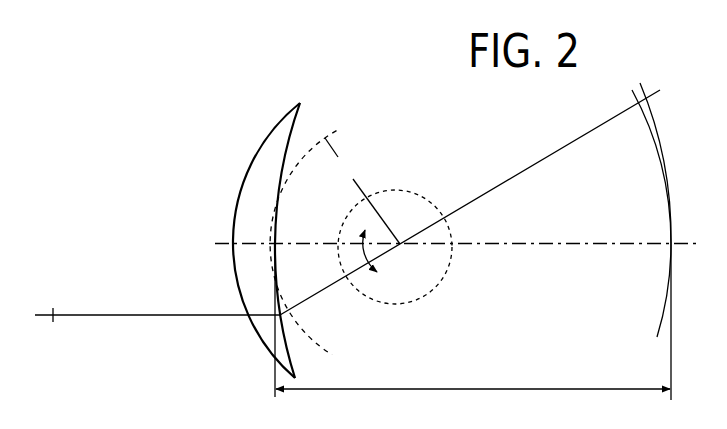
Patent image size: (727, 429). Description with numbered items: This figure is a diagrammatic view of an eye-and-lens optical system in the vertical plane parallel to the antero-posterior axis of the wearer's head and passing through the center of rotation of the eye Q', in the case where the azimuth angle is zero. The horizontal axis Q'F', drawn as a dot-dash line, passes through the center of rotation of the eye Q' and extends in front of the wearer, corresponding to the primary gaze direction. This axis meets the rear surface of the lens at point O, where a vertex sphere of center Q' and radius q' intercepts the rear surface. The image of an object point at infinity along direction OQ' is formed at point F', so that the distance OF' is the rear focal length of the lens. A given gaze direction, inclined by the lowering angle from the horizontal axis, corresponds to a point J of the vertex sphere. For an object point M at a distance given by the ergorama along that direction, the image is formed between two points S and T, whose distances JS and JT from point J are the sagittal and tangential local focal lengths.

The point O is at (266, 240).
The point J is at (470, 211).
The object point M is at (157, 328).
The point F' is at (457, 228).
The point T is at (636, 206).
The point S is at (655, 151).
The center of rotation of the eye Q' is at (395, 247).
The radius of the vertex sphere q' is at (335, 243).